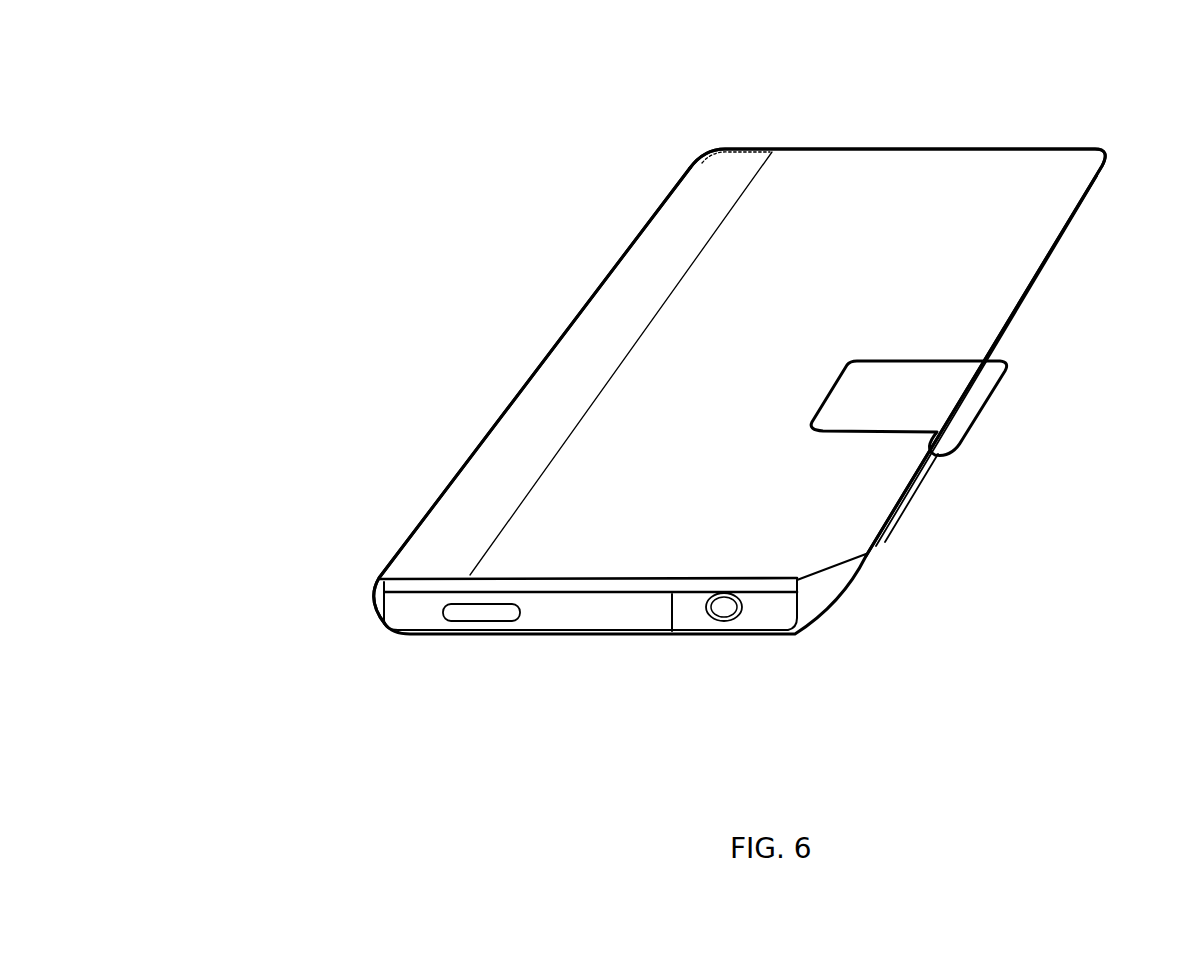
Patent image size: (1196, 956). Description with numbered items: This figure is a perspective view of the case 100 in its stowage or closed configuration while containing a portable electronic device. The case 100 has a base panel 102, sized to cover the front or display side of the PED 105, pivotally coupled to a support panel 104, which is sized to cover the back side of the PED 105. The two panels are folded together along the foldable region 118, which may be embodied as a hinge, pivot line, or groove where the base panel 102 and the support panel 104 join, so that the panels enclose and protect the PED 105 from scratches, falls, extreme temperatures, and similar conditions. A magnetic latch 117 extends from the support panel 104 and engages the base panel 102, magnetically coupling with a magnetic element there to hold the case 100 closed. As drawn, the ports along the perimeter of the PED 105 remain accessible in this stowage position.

The case 100 is at (566, 136).
The base panel 102 is at (838, 183).
The support panel 104 is at (680, 637).
The PED 105 is at (593, 605).
The magnetic latch 117 is at (985, 392).
The foldable region 118 is at (372, 587).